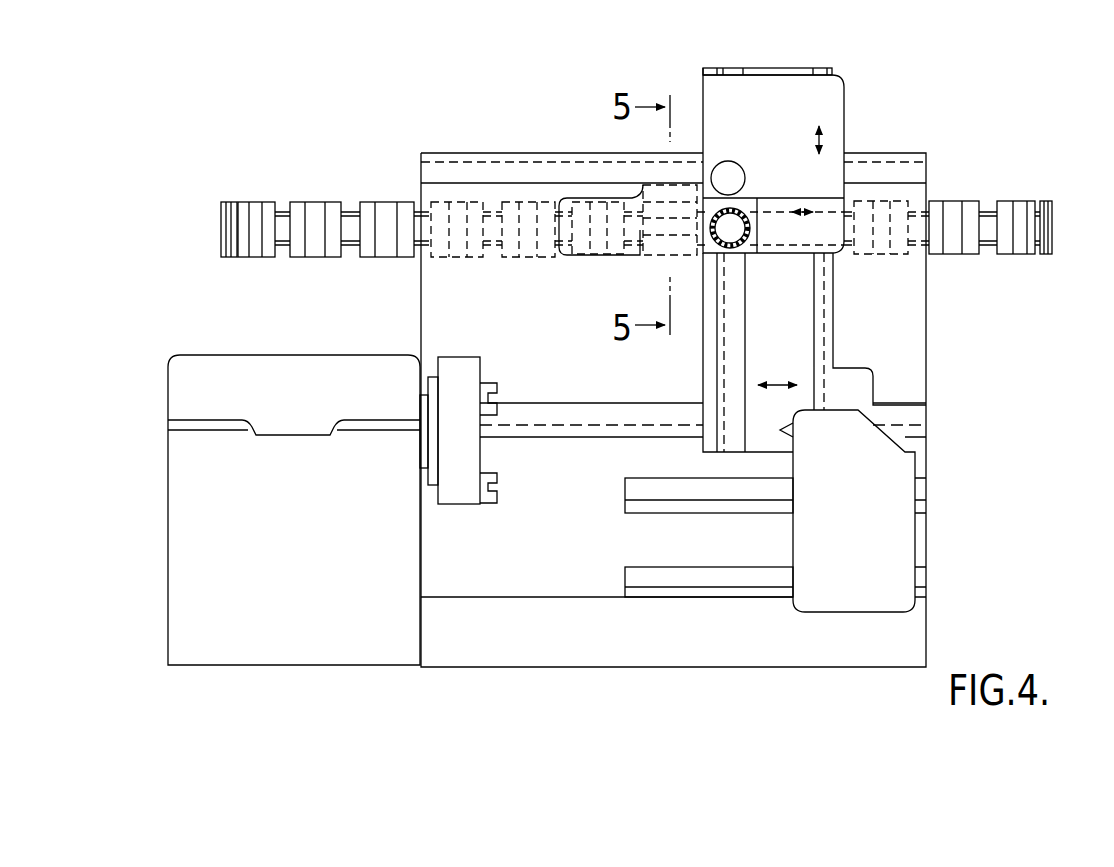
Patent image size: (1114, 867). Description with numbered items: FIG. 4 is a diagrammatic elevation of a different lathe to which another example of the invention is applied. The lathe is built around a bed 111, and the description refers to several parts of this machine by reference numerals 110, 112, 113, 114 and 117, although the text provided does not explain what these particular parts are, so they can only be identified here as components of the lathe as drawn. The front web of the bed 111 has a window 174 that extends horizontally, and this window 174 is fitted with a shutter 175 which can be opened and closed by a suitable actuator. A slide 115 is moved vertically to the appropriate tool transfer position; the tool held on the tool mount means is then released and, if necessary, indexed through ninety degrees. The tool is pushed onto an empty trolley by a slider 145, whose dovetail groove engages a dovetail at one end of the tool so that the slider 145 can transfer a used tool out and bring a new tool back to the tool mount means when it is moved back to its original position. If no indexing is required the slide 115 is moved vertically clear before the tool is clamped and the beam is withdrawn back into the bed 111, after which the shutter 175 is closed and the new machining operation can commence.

The base 110 is at (835, 628).
The bed 111 is at (437, 306).
The headstock housing 112 is at (188, 592).
The cap 113 is at (783, 73).
The chuck 114 is at (426, 452).
The slide 115 is at (832, 148).
The gear 117 is at (723, 208).
The slider 145 is at (827, 210).
The window 174 is at (637, 208).
The shutter 175 is at (637, 250).